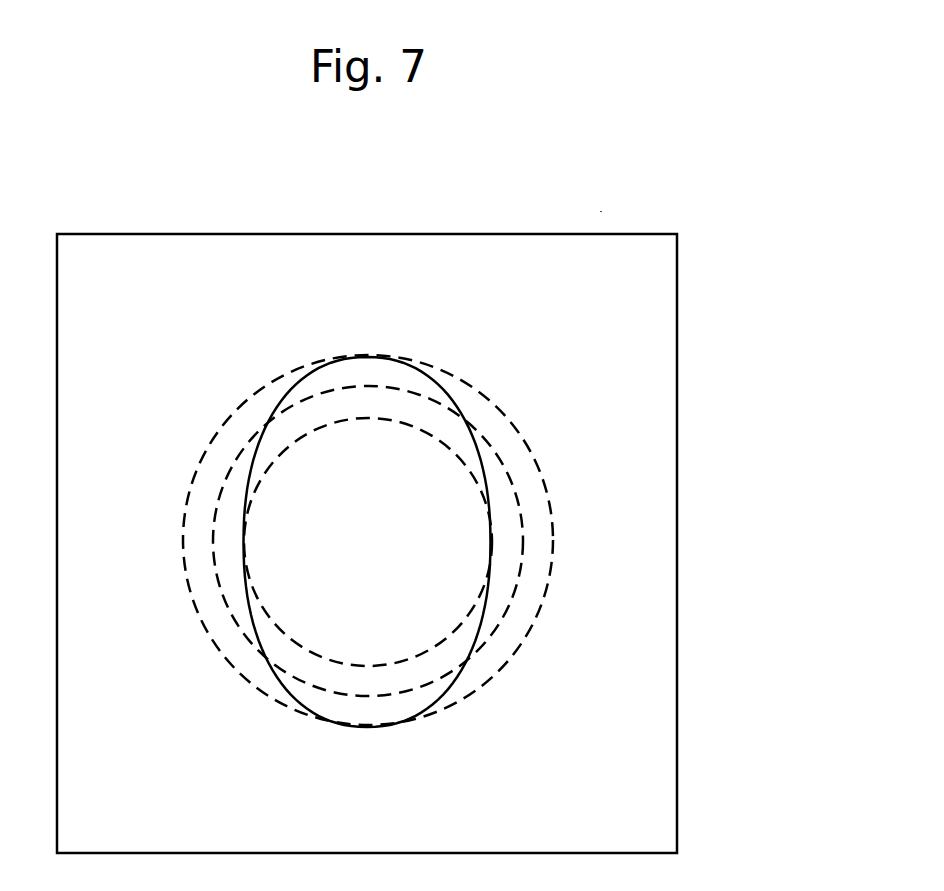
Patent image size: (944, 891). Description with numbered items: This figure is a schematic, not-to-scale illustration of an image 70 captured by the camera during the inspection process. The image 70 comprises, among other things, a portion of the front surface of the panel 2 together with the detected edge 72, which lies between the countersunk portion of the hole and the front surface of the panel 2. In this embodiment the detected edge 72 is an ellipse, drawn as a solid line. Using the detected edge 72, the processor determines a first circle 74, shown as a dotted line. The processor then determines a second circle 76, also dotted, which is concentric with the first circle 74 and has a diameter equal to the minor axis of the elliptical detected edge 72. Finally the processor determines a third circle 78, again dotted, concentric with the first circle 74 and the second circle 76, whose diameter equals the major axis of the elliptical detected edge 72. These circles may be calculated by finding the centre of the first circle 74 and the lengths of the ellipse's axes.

The image 70 is at (601, 211).
The panel 2 is at (643, 376).
The detected edge 72 is at (462, 412).
The first circle 74 is at (235, 462).
The second circle 76 is at (292, 442).
The third circle 78 is at (202, 625).